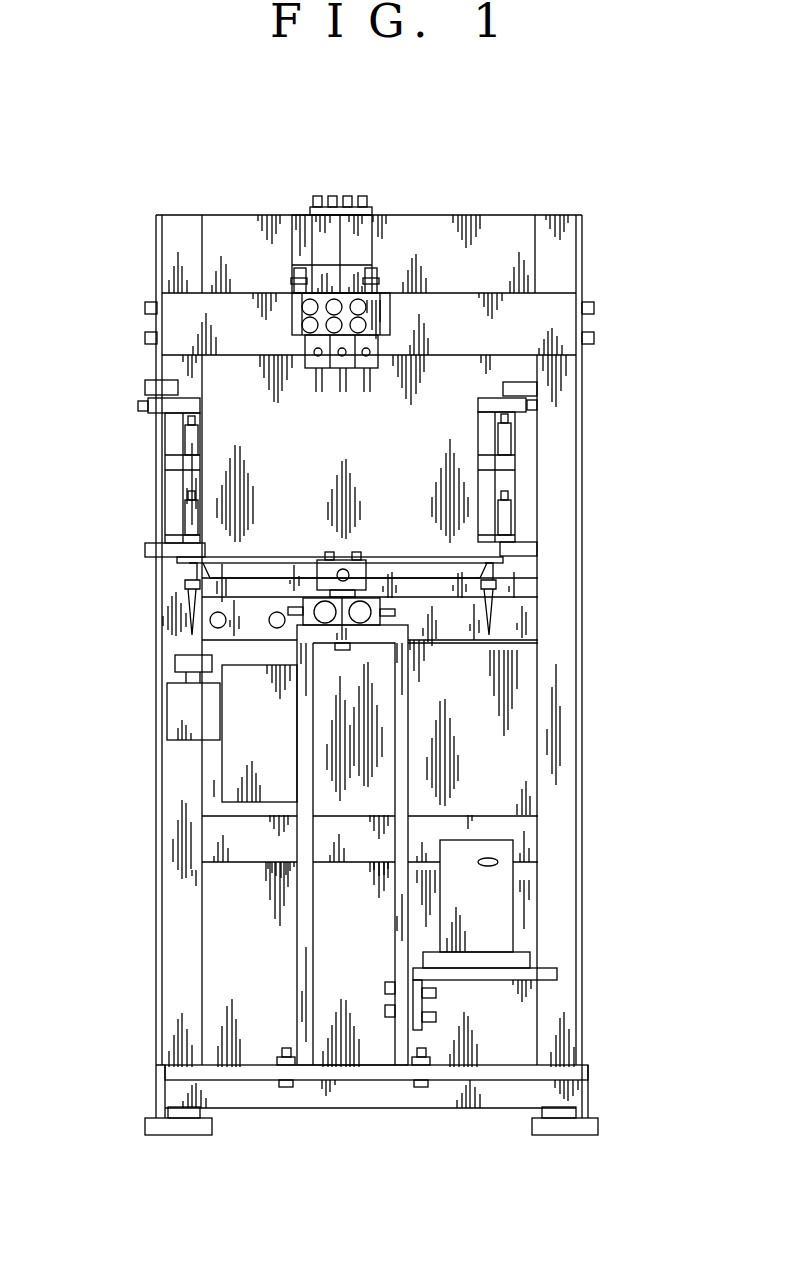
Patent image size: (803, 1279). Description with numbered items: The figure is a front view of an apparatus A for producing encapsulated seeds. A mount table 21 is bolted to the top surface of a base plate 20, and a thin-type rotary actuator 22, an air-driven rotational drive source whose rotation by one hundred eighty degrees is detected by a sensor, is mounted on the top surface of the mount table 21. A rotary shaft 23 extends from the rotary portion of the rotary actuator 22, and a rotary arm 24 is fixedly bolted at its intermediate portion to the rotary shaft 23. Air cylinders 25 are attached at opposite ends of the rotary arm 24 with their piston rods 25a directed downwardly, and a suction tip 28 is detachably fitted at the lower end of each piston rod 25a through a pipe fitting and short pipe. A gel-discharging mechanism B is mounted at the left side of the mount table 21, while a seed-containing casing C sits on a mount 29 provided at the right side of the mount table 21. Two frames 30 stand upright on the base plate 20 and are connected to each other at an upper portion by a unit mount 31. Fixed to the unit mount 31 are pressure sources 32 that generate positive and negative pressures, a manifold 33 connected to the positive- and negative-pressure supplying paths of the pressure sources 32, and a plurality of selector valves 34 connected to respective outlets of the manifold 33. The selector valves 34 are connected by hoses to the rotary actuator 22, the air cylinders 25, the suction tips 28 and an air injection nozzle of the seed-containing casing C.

The apparatus for producing encapsulated seeds A is at (642, 223).
The gel-discharging mechanism B is at (240, 770).
The seed-containing casing C is at (498, 890).
The base plate 20 is at (245, 1072).
The mount table 21 is at (303, 943).
The rotary actuator 22 is at (297, 613).
The rotary shaft 23 is at (320, 588).
The rotary arm 24 is at (250, 562).
The air cylinders 25 is at (190, 477).
The piston rods 25a is at (185, 583).
The suction tip 28 is at (492, 612).
The mount 29 is at (548, 983).
The frames 30 is at (567, 722).
The unit mount 31 is at (468, 312).
The pressure sources 32 is at (356, 240).
The manifold 33 is at (290, 305).
The selector valves 34 is at (290, 347).